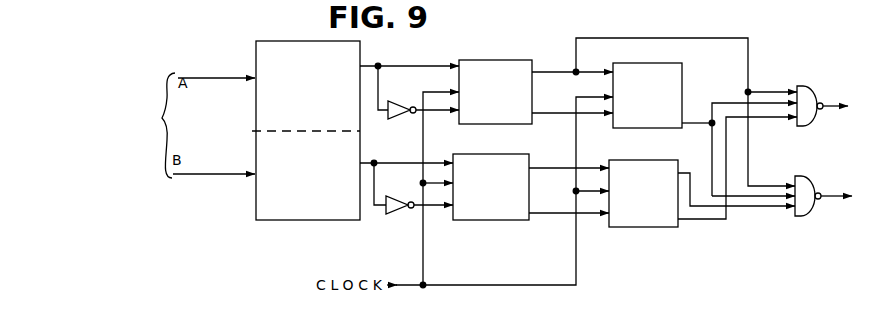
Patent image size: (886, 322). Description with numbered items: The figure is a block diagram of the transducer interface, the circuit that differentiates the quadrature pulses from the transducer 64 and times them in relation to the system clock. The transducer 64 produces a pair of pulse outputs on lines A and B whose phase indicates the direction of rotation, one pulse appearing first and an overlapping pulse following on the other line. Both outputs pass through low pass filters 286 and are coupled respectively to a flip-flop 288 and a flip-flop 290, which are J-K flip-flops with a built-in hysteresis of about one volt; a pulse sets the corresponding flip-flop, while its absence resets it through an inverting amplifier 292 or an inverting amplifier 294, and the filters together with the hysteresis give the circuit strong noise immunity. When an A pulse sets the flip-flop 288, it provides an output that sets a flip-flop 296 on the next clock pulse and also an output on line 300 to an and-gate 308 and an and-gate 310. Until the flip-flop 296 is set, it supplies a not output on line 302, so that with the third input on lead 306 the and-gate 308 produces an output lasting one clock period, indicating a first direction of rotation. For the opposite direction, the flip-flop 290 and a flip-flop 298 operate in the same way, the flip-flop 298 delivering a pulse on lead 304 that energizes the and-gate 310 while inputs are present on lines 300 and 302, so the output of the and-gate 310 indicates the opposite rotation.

The transducer 64 is at (102, 125).
The low pass filters 286 is at (257, 46).
The flip-flop 288 is at (490, 60).
The flip-flop 290 is at (487, 221).
The inverting amplifier 292 is at (390, 120).
The inverting amplifier 294 is at (388, 215).
The flip-flop 296 is at (652, 63).
The flip-flop 298 is at (637, 228).
The line 300 is at (606, 38).
The line 302 is at (696, 118).
The lead 304 is at (693, 160).
The lead 306 is at (700, 222).
The and-gate 308 is at (805, 85).
The and-gate 310 is at (801, 222).